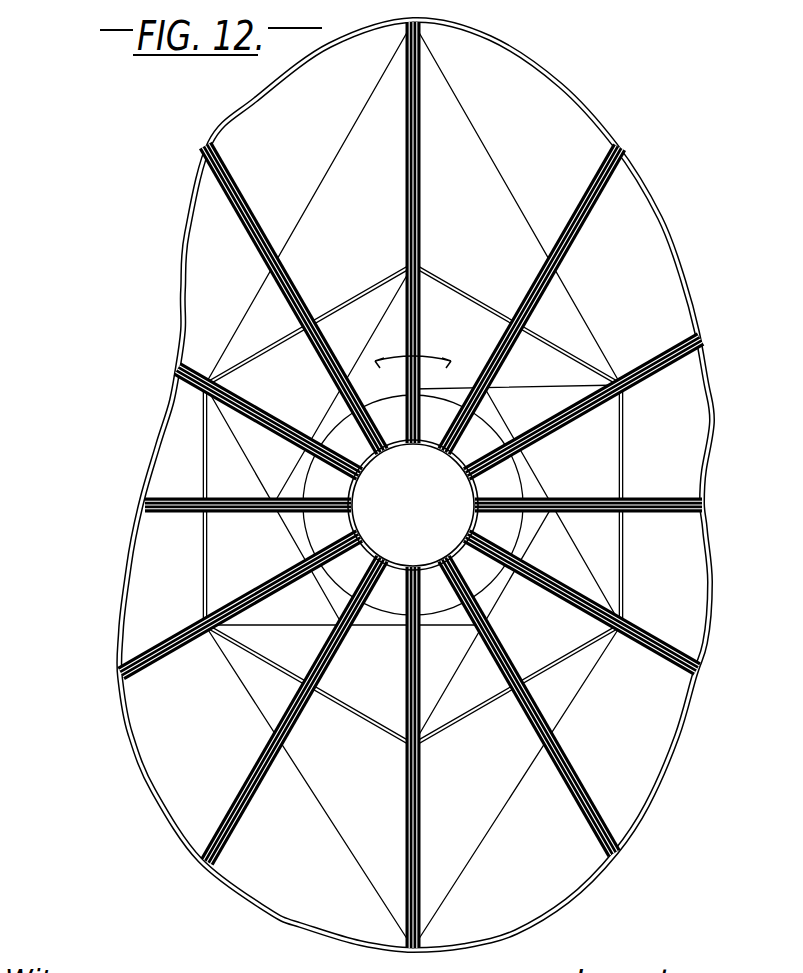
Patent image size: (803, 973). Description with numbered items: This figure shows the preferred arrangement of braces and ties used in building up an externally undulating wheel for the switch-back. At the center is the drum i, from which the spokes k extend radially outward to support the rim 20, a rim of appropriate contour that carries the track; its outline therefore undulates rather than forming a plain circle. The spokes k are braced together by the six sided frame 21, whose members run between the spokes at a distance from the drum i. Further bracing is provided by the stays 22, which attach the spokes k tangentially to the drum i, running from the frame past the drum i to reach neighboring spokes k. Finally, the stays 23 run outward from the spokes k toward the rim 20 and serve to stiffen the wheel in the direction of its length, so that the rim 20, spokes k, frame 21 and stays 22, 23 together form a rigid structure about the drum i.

The rim 20 is at (183, 273).
The spokes k is at (247, 203).
The drum i is at (352, 514).
The six sided frame 21 is at (352, 297).
The stays 22 is at (376, 338).
The stays 23 is at (310, 207).